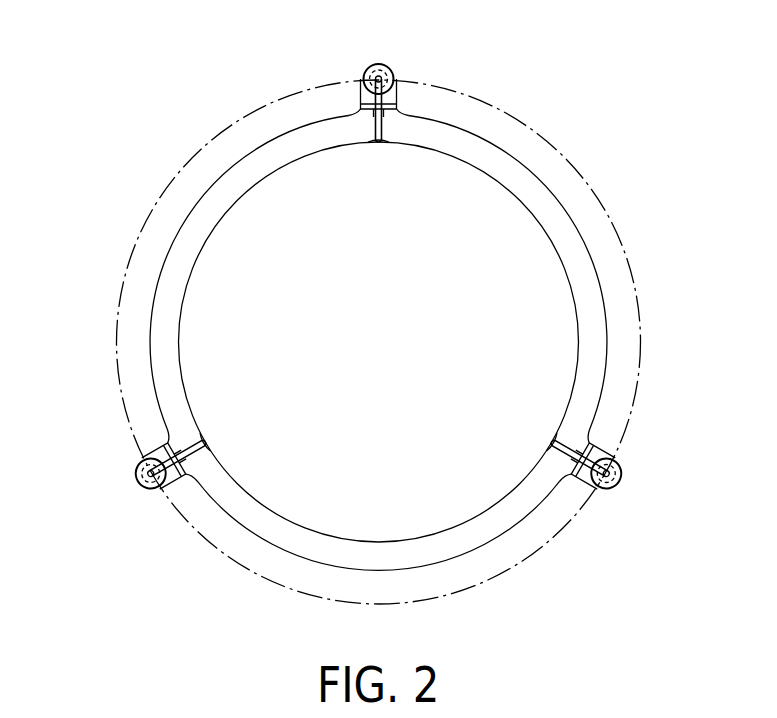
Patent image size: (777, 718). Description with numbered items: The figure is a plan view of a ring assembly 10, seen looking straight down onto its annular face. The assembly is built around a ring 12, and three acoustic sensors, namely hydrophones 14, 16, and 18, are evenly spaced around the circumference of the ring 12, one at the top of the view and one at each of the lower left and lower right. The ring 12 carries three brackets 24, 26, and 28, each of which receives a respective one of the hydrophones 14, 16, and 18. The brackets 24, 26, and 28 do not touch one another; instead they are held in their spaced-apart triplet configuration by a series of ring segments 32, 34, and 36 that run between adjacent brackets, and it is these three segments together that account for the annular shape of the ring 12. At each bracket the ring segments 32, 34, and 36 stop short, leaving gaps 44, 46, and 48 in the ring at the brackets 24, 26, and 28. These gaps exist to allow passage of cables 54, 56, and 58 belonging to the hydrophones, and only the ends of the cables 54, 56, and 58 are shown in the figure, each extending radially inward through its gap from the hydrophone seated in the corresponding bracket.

The ring assembly 10 is at (137, 122).
The ring 12 is at (167, 243).
The acoustic sensor (hydrophone) 14 is at (138, 484).
The acoustic sensor (hydrophone) 16 is at (378, 64).
The acoustic sensor (hydrophone) 18 is at (623, 470).
The bracket 24 is at (152, 447).
The bracket 26 is at (392, 98).
The bracket 28 is at (600, 453).
The ring segment 32 is at (298, 543).
The ring segment 34 is at (243, 173).
The ring segment 36 is at (558, 220).
The gap 44 is at (210, 440).
The gap 46 is at (380, 150).
The gap 48 is at (545, 438).
The cable 54 is at (177, 425).
The cable 56 is at (410, 120).
The cable 58 is at (595, 412).